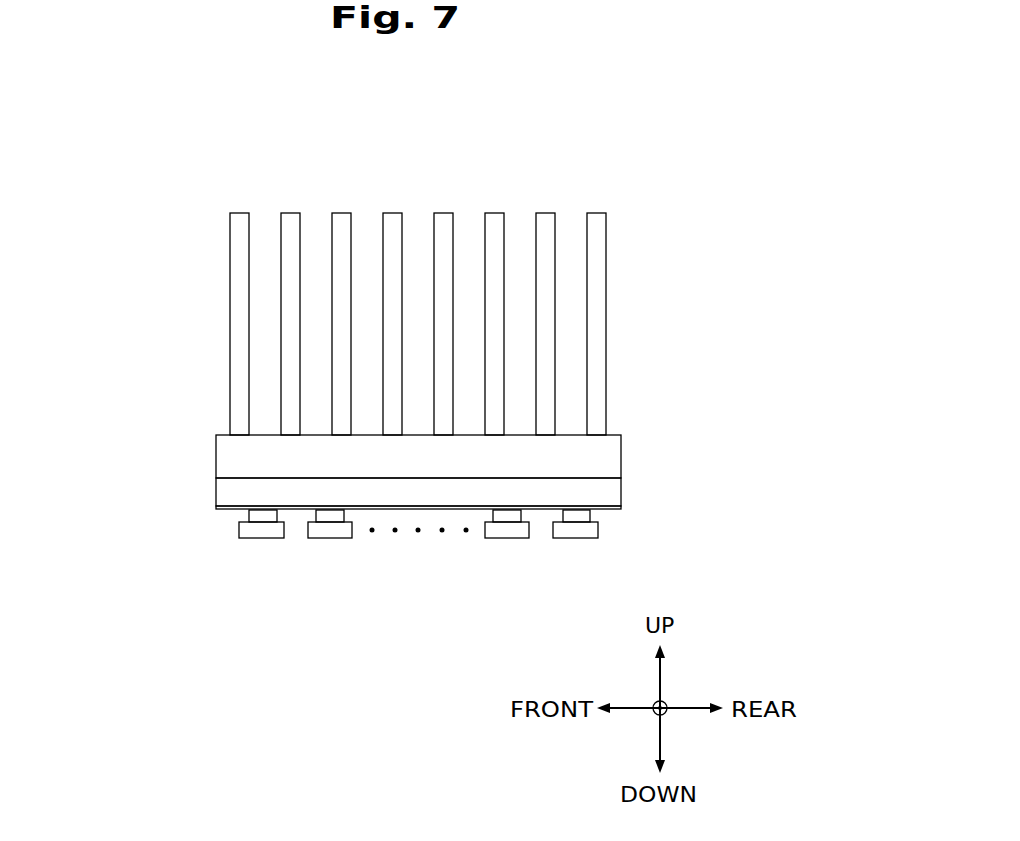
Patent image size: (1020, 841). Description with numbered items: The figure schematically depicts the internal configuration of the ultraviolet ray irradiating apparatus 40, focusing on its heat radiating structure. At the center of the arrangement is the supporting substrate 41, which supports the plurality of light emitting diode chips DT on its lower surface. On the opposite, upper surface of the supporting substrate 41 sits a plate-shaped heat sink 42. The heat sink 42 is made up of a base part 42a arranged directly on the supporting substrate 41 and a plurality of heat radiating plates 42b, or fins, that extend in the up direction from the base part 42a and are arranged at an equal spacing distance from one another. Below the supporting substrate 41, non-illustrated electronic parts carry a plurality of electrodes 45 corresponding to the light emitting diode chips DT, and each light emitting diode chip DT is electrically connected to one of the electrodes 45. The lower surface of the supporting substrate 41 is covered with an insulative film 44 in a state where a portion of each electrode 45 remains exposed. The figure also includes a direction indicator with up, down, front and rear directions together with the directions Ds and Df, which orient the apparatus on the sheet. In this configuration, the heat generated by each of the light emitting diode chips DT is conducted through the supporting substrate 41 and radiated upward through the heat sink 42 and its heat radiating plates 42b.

The ultraviolet ray irradiating apparatus 40 is at (429, 179).
The supporting substrate 41 is at (231, 493).
The heat sink 42 is at (131, 240).
The base part 42a is at (234, 451).
The heat radiating plates 42b is at (238, 250).
The insulative film 44 is at (217, 508).
The electrodes 45 is at (249, 516).
The light emitting diode chips DT is at (270, 531).
The direction Ds is at (665, 700).
The direction Df is at (680, 710).